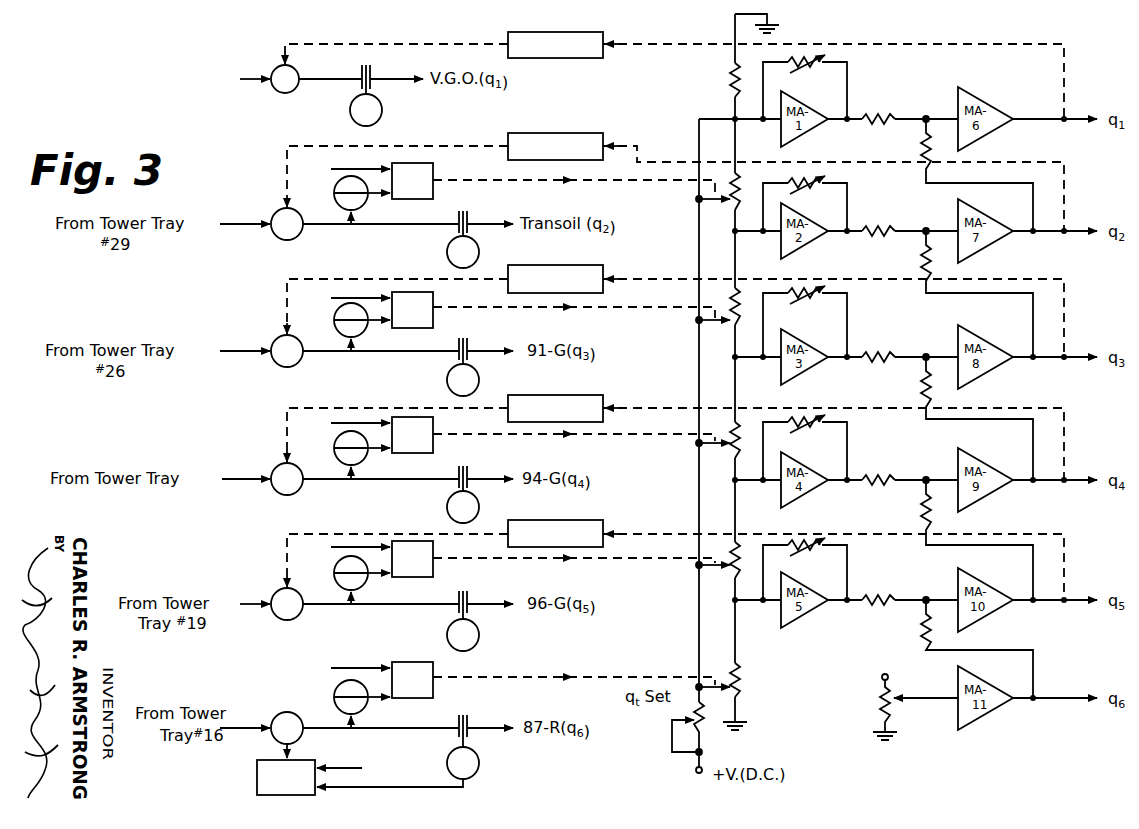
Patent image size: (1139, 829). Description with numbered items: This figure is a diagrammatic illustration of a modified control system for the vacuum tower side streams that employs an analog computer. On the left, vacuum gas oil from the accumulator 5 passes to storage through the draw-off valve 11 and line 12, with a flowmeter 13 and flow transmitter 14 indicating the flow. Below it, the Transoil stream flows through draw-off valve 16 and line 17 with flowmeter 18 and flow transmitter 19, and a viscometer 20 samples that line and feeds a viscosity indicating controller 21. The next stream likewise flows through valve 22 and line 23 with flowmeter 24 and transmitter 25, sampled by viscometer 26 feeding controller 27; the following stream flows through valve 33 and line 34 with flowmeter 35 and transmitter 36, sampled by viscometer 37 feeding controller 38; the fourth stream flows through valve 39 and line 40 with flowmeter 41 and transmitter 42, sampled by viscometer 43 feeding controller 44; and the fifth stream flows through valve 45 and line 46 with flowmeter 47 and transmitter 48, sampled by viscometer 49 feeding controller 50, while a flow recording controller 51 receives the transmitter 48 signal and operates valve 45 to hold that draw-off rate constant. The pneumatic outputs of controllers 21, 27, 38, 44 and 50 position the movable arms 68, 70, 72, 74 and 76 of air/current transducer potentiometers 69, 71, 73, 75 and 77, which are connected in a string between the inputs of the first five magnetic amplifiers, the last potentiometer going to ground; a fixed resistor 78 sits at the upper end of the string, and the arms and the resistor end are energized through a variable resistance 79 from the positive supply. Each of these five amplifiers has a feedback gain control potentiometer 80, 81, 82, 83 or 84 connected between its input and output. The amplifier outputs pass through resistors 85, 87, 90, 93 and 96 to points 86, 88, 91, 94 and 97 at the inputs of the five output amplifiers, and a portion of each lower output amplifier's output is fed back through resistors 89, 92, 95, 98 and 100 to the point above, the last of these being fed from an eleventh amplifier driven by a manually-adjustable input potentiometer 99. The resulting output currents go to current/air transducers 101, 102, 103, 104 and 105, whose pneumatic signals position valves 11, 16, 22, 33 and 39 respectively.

The accumulator 5 is at (162, 111).
The draw-off valve 11 is at (271, 68).
The line 12 is at (326, 81).
The flowmeter 13 is at (369, 69).
The flow transmitter 14 is at (383, 112).
The draw-off valve 16 is at (277, 213).
The line 17 is at (378, 229).
The flowmeter 18 is at (467, 217).
The flow transmitter 19 is at (447, 250).
The viscometer 20 is at (336, 187).
The viscosity indicating controller 21 is at (434, 178).
The draw-off valve 22 is at (275, 339).
The line 23 is at (396, 353).
The flowmeter 24 is at (468, 345).
The flow transmitter 25 is at (448, 378).
The viscometer 26 is at (335, 322).
The viscosity indicating controller 27 is at (418, 291).
The draw-off valve 33 is at (275, 468).
The line 34 is at (406, 480).
The flowmeter 35 is at (468, 473).
The flow transmitter 36 is at (480, 505).
The viscometer 37 is at (334, 451).
The viscosity indicating controller 38 is at (421, 416).
The draw-off valve 39 is at (280, 590).
The line 40 is at (390, 605).
The flowmeter 41 is at (468, 598).
The flow transmitter 42 is at (480, 636).
The viscometer 43 is at (334, 574).
The viscosity indicating controller 44 is at (410, 540).
The draw-off valve 45 is at (292, 715).
The line 46 is at (420, 729).
The flowmeter 47 is at (470, 720).
The flow transmitter 48 is at (480, 764).
The viscometer 49 is at (334, 697).
The viscosity indicating controller 50 is at (425, 662).
The flow recording controller 51 is at (257, 779).
The movable arm 68 is at (707, 203).
The air/current transducer potentiometer 69 is at (735, 190).
The movable arm 70 is at (699, 323).
The air/current transducer potentiometer 71 is at (737, 290).
The movable arm 72 is at (699, 447).
The air/current transducer potentiometer 73 is at (738, 425).
The movable arm 74 is at (699, 569).
The air/current transducer potentiometer 75 is at (740, 548).
The movable arm 76 is at (710, 692).
The air/current transducer potentiometer 77 is at (742, 681).
The fixed resistor 78 is at (729, 80).
The variable resistance 79 is at (690, 734).
The feedback gain control potentiometer 80 is at (795, 60).
The feedback gain control potentiometer 81 is at (800, 182).
The feedback gain control potentiometer 82 is at (802, 292).
The feedback gain control potentiometer 83 is at (797, 421).
The feedback gain control potentiometer 84 is at (808, 544).
The resistor 85 is at (875, 118).
The point 86 is at (927, 116).
The resistor 87 is at (880, 229).
The point 88 is at (927, 228).
The resistor 89 is at (921, 148).
The resistor 90 is at (877, 355).
The point 91 is at (930, 355).
The resistor 92 is at (922, 260).
The resistor 93 is at (877, 478).
The point 94 is at (928, 478).
The resistor 95 is at (924, 385).
The resistor 96 is at (885, 598).
The point 97 is at (930, 598).
The resistor 98 is at (925, 513).
The manually-adjustable input potentiometer 99 is at (883, 692).
The resistor 100 is at (923, 629).
The current/air transducer 101 is at (509, 38).
The current/air transducer 102 is at (550, 130).
The current/air transducer 103 is at (579, 264).
The current/air transducer 104 is at (540, 396).
The current/air transducer 105 is at (576, 514).